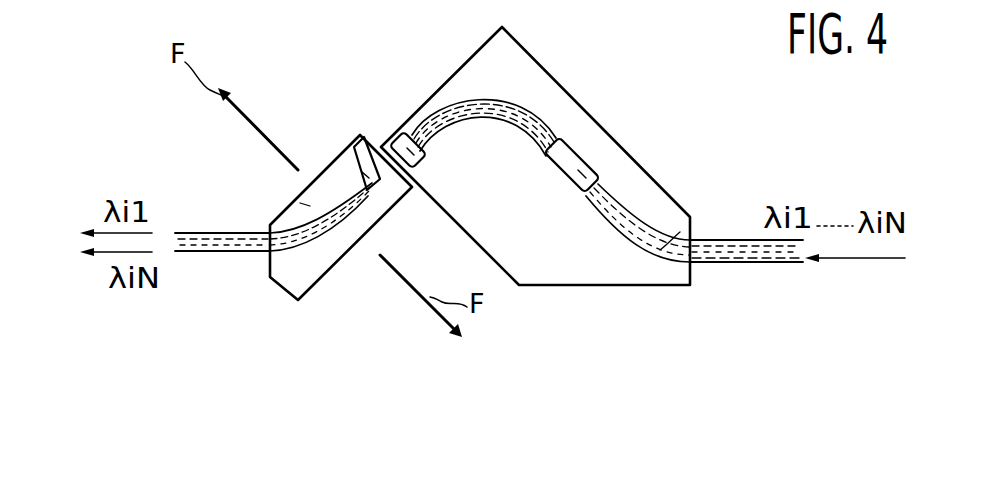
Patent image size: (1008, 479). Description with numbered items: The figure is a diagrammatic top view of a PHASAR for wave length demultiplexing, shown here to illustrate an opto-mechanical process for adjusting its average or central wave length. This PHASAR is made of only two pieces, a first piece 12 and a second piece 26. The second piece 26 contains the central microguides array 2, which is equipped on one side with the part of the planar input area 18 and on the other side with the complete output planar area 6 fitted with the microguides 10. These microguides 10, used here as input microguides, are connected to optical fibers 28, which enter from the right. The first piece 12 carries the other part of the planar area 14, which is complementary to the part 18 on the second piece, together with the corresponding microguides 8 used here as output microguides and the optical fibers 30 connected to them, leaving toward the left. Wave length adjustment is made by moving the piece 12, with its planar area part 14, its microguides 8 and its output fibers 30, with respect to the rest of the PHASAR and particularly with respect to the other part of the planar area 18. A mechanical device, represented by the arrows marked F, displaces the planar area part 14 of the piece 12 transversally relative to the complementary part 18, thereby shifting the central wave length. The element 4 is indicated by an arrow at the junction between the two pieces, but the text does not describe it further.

The central microguides array 2 is at (527, 120).
The fiber joint / coupling point 4 is at (424, 165).
The output planar area 6 is at (588, 178).
The microguides 8 is at (299, 249).
The microguides 10 is at (660, 250).
The PHASAR piece 12 is at (308, 205).
The part of the planar area 14 is at (358, 146).
The part of the planar input area 18 is at (400, 144).
The piece 26 is at (495, 66).
The optical fibers 28 is at (733, 262).
The optical fibers 30 is at (223, 237).